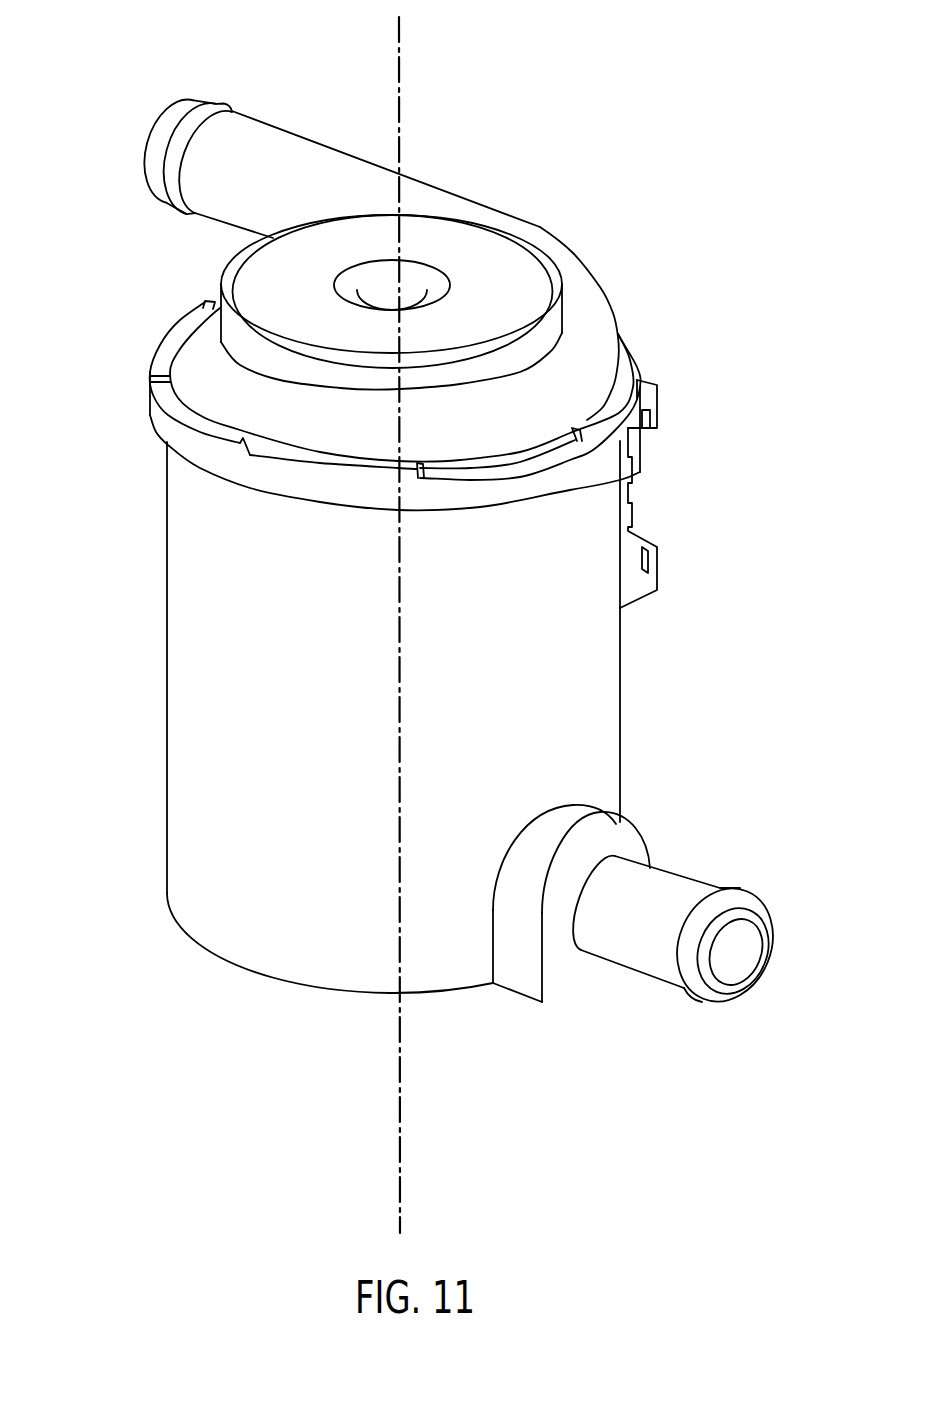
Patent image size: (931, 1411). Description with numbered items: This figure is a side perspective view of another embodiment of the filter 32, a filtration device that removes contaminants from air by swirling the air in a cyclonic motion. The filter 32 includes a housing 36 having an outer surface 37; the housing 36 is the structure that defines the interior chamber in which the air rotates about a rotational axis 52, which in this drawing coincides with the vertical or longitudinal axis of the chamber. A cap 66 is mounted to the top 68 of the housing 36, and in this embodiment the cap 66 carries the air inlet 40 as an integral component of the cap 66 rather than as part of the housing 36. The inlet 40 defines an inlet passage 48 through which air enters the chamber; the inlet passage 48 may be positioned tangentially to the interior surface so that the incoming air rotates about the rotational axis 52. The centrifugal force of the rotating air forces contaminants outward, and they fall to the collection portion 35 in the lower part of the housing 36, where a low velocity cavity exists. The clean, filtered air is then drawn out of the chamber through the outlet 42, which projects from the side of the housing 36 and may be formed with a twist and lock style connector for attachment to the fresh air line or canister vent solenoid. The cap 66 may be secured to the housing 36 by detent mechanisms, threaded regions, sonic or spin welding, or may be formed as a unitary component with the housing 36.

The filter 32 is at (648, 78).
The inlet 40 is at (262, 68).
The inlet passage 48 is at (140, 135).
The cap 66 is at (615, 313).
The top 68 is at (125, 443).
The collection portion 35 is at (125, 830).
The housing 36 is at (155, 658).
The outer surface 37 is at (622, 712).
The outlet 42 is at (740, 885).
The rotational axis 52 is at (401, 1172).